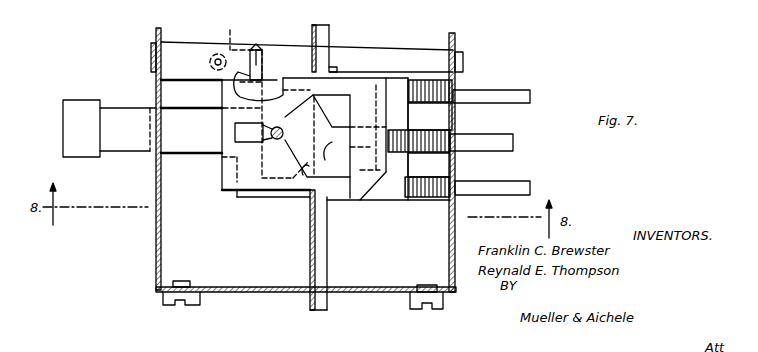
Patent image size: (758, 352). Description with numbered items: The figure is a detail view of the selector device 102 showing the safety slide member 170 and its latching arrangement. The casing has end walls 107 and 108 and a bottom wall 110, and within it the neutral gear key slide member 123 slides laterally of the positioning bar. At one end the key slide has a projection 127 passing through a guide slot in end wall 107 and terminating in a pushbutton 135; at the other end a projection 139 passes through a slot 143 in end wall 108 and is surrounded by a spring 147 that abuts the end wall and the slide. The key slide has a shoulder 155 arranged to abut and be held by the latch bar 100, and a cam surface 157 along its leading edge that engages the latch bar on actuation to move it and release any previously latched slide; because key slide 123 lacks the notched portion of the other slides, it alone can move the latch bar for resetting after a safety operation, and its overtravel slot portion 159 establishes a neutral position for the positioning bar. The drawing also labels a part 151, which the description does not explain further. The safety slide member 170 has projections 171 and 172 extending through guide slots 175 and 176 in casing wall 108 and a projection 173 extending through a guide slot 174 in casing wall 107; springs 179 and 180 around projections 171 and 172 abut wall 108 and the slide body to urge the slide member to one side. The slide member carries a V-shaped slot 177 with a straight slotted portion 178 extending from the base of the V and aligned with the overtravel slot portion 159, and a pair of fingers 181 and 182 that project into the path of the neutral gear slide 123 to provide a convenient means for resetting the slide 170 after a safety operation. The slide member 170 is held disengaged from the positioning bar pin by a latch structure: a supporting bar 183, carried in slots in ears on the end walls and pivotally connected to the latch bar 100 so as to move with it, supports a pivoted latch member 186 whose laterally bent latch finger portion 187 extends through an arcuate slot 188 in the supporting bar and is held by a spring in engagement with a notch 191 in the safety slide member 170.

The latch bar 100 is at (316, 311).
The selector device 102 is at (398, 300).
The end wall 107 is at (155, 243).
The end wall 108 is at (449, 262).
The bottom wall 110 is at (238, 292).
The key slide member 123 is at (333, 202).
The projection 127 is at (115, 106).
The pushbutton 135 is at (63, 126).
The projection 139 is at (513, 141).
The slot 143 is at (455, 129).
The spring 147 is at (419, 153).
The pivot pin 151 is at (284, 130).
The shoulder 155 is at (312, 205).
The cam surface 157 is at (362, 203).
The overtravel slot portion 159 is at (262, 148).
The safety slide member 170 is at (370, 203).
The projection 171 is at (530, 186).
The projection 172 is at (510, 90).
The projection 173 is at (180, 157).
The guide slot 174 is at (158, 170).
The guide slot 175 is at (430, 105).
The guide slot 176 is at (455, 177).
The V-shaped slot 177 is at (312, 160).
The straight slotted portion 178 is at (321, 159).
The spring 179 is at (452, 90).
The spring 180 is at (434, 198).
The finger 181 is at (392, 112).
The finger 182 is at (394, 190).
The supporting bar 183 is at (181, 46).
The latch member 186 is at (236, 43).
The latch finger portion 187 is at (262, 62).
The arcuate slot 188 is at (257, 48).
The notch 191 is at (270, 78).